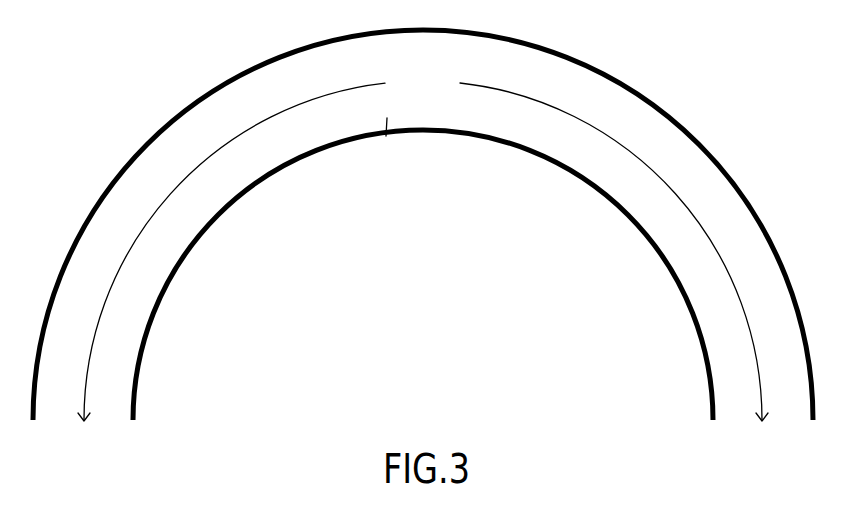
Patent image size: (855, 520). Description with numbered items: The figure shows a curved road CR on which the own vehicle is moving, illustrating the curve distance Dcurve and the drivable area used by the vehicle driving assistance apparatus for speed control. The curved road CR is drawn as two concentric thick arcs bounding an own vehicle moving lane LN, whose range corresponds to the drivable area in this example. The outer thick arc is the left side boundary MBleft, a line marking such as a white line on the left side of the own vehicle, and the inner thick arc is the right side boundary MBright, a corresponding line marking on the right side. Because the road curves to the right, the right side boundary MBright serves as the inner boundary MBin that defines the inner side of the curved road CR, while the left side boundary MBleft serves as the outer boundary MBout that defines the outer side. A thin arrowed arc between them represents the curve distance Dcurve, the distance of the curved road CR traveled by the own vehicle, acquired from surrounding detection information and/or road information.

The left side boundary MBleft is at (410, 225).
The outer boundary MBout is at (80, 230).
The right side boundary MBright is at (423, 275).
The inner boundary MBin is at (185, 257).
The curve distance Dcurve is at (423, 247).
The own vehicle moving lane LN is at (247, 118).
The curved road CR is at (386, 136).